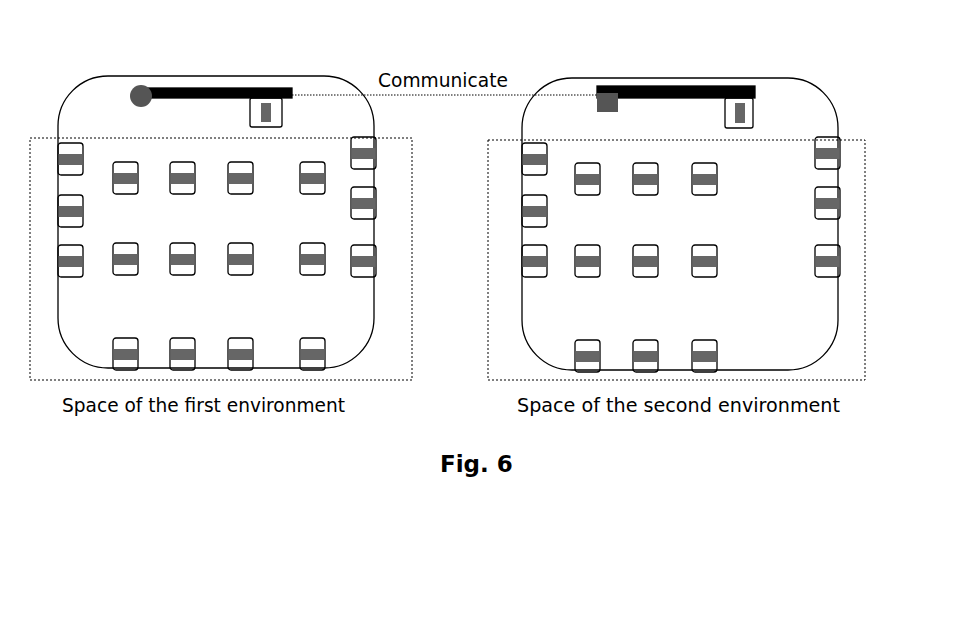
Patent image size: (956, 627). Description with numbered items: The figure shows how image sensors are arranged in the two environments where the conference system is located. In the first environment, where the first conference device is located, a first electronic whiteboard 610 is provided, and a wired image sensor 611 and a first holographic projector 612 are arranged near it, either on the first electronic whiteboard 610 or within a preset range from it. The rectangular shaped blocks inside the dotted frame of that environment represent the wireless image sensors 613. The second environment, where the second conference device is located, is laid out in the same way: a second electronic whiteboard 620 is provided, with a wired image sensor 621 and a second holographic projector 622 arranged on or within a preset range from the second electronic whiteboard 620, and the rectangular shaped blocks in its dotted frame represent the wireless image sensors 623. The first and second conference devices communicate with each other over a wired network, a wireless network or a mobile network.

The first electronic whiteboard 610 is at (183, 88).
The wired image sensor 611 is at (264, 95).
The first holographic projector 612 is at (134, 91).
The wireless image sensors 613 is at (117, 242).
The second electronic whiteboard 620 is at (668, 87).
The wired image sensor 621 is at (758, 112).
The second holographic projector 622 is at (594, 102).
The wireless image sensors 623 is at (578, 242).